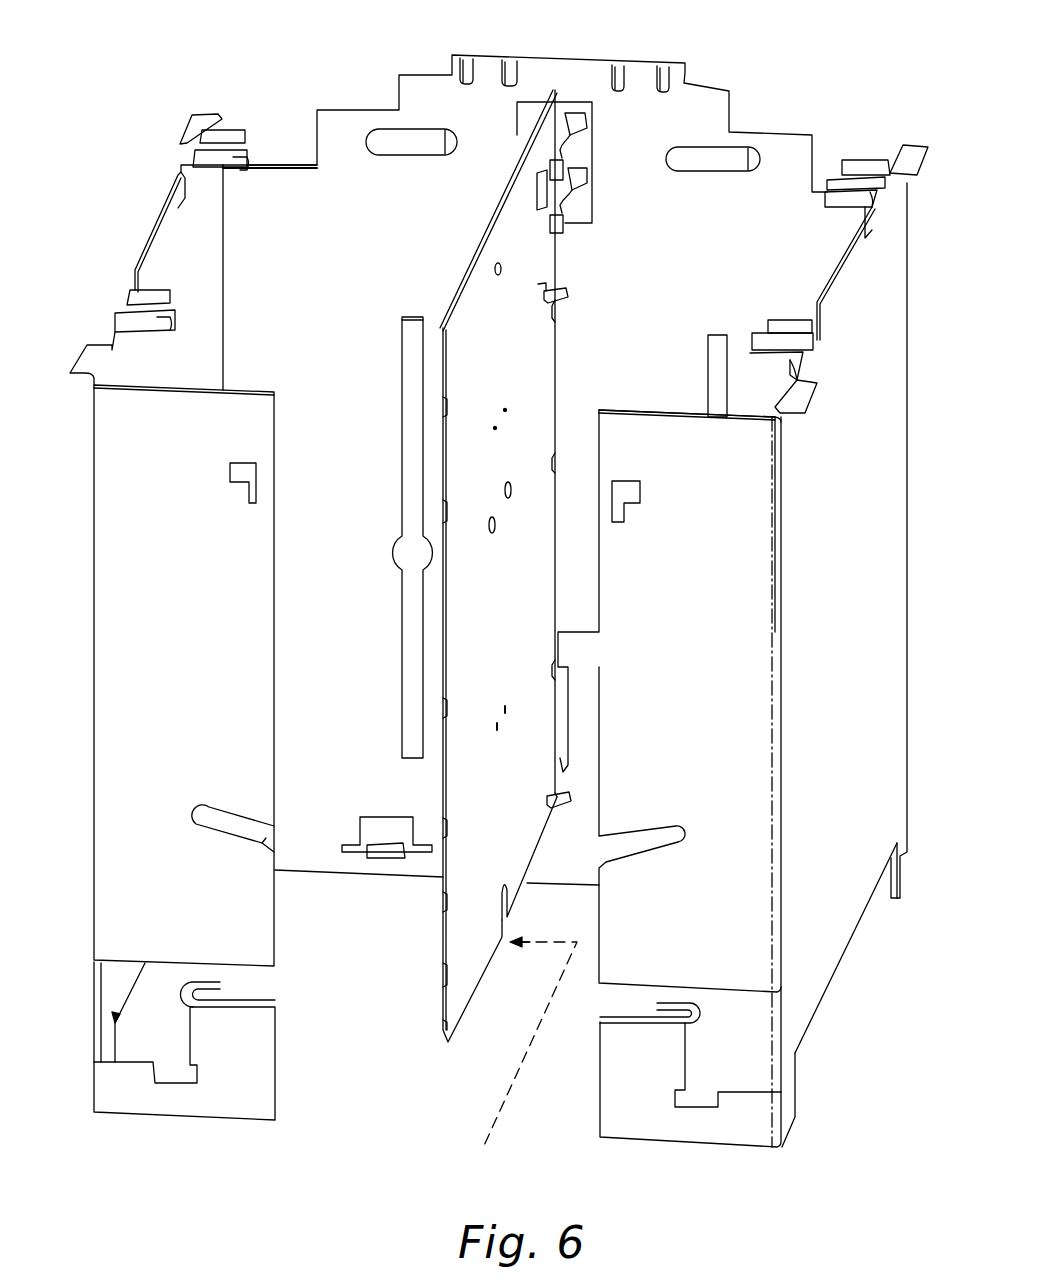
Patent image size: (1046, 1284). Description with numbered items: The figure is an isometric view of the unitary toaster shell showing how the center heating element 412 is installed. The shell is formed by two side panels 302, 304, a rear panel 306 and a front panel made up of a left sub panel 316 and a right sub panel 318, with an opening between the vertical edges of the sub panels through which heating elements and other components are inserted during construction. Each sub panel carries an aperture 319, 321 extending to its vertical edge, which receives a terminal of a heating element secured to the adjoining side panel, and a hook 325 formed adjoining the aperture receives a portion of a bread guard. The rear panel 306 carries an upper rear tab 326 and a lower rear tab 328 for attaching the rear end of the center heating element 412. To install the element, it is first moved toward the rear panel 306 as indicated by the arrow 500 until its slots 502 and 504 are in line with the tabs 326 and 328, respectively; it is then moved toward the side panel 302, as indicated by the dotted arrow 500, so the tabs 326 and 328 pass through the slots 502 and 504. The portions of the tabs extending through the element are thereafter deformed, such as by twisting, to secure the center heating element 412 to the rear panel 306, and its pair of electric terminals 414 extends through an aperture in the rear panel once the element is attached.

The side panel 302 is at (167, 201).
The side panel 304 is at (835, 873).
The rear panel 306 is at (570, 66).
The left sub panel 316 is at (237, 630).
The right sub panel 318 is at (636, 424).
The aperture 319 is at (148, 1028).
The aperture 321 is at (740, 1070).
The hook 325 is at (220, 987).
The upper rear tab 326 is at (570, 287).
The lower rear tab 328 is at (571, 793).
The center heating element 412 is at (467, 313).
The terminals 414 is at (572, 168).
The arrow 500 is at (497, 1117).
The slot 502 is at (543, 305).
The slot 504 is at (549, 802).